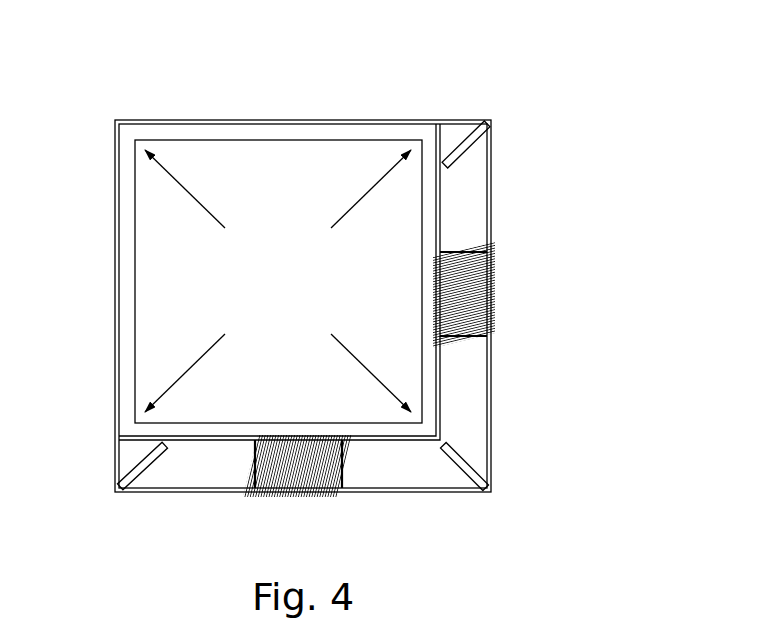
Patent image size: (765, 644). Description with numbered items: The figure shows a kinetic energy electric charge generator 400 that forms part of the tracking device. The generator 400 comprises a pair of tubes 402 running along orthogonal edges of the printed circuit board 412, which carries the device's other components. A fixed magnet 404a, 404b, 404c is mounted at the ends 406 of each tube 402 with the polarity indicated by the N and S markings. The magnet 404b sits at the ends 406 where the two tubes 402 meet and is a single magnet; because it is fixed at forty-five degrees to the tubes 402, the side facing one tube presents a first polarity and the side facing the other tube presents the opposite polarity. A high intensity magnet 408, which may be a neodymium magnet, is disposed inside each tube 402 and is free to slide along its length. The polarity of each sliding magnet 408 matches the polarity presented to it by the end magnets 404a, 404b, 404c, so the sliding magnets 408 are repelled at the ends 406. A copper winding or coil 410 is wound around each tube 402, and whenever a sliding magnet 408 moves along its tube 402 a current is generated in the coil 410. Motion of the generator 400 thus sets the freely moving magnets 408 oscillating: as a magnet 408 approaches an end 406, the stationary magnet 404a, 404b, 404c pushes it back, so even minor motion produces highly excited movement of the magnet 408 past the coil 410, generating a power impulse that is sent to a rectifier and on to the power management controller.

The kinetic energy electric charge generator 400 is at (215, 113).
The tube 402 is at (492, 213).
The magnet 404a is at (488, 130).
The magnet 404b is at (479, 470).
The magnet 404c is at (133, 482).
The end 406 is at (467, 123).
The high intensity magnet 408 is at (452, 247).
The copper winding/coil 410 is at (477, 345).
The printed circuit board 412 is at (355, 153).